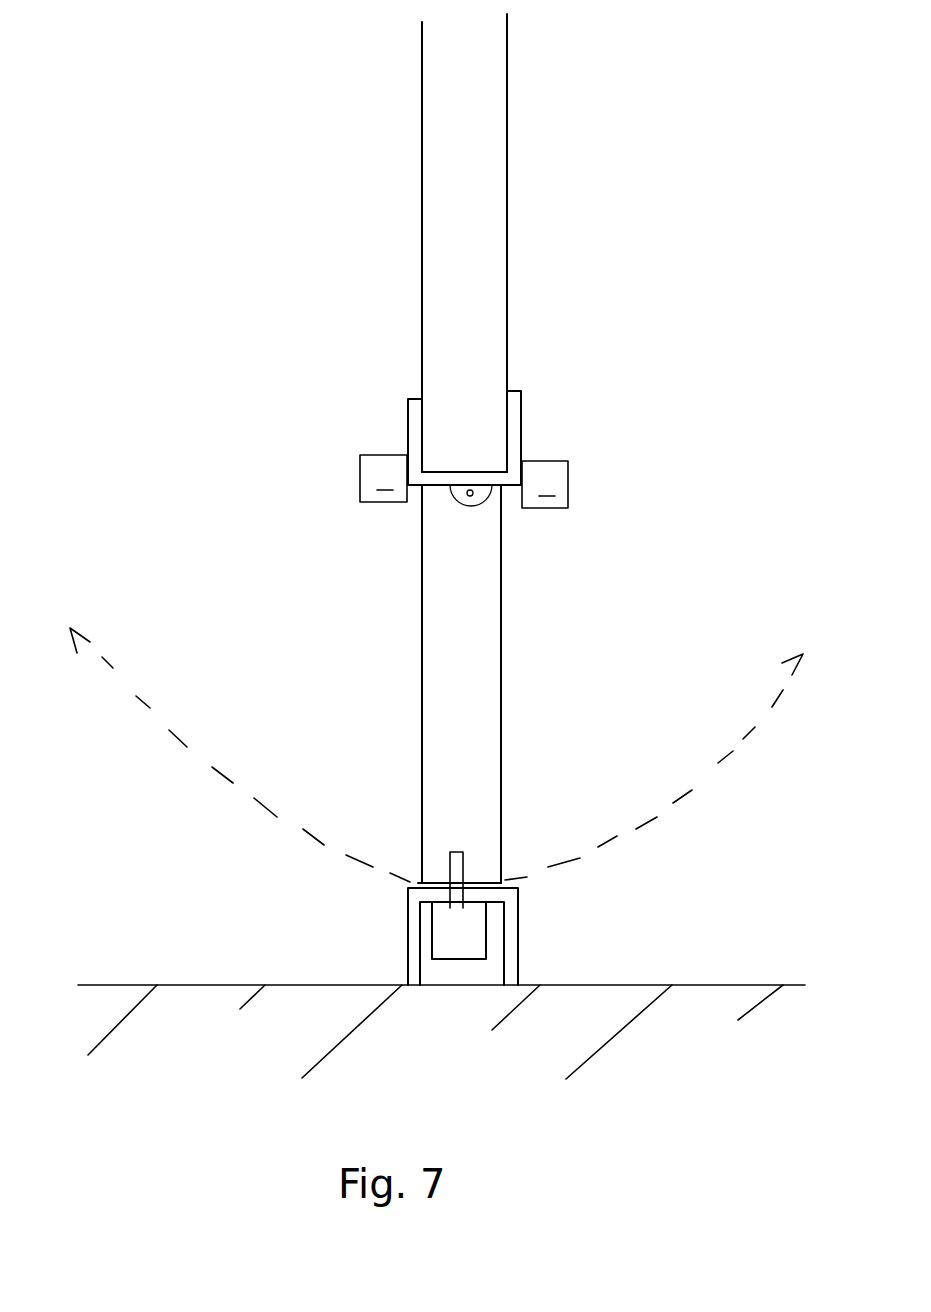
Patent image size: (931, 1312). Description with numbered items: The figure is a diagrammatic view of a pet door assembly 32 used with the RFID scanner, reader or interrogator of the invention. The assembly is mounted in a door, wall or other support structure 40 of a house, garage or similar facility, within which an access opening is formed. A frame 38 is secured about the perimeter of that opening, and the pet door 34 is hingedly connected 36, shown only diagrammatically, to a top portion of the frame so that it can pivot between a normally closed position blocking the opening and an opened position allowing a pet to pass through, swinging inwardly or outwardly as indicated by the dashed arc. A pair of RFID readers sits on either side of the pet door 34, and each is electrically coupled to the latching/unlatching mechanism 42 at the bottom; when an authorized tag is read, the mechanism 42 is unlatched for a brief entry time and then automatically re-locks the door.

The pet door assembly 32 is at (643, 449).
The support structure 40 is at (493, 193).
The frame 38 is at (407, 442).
The hinged connection 36 is at (467, 493).
The pet door 34 is at (500, 683).
The latching/unlatching mechanism 42 is at (478, 935).